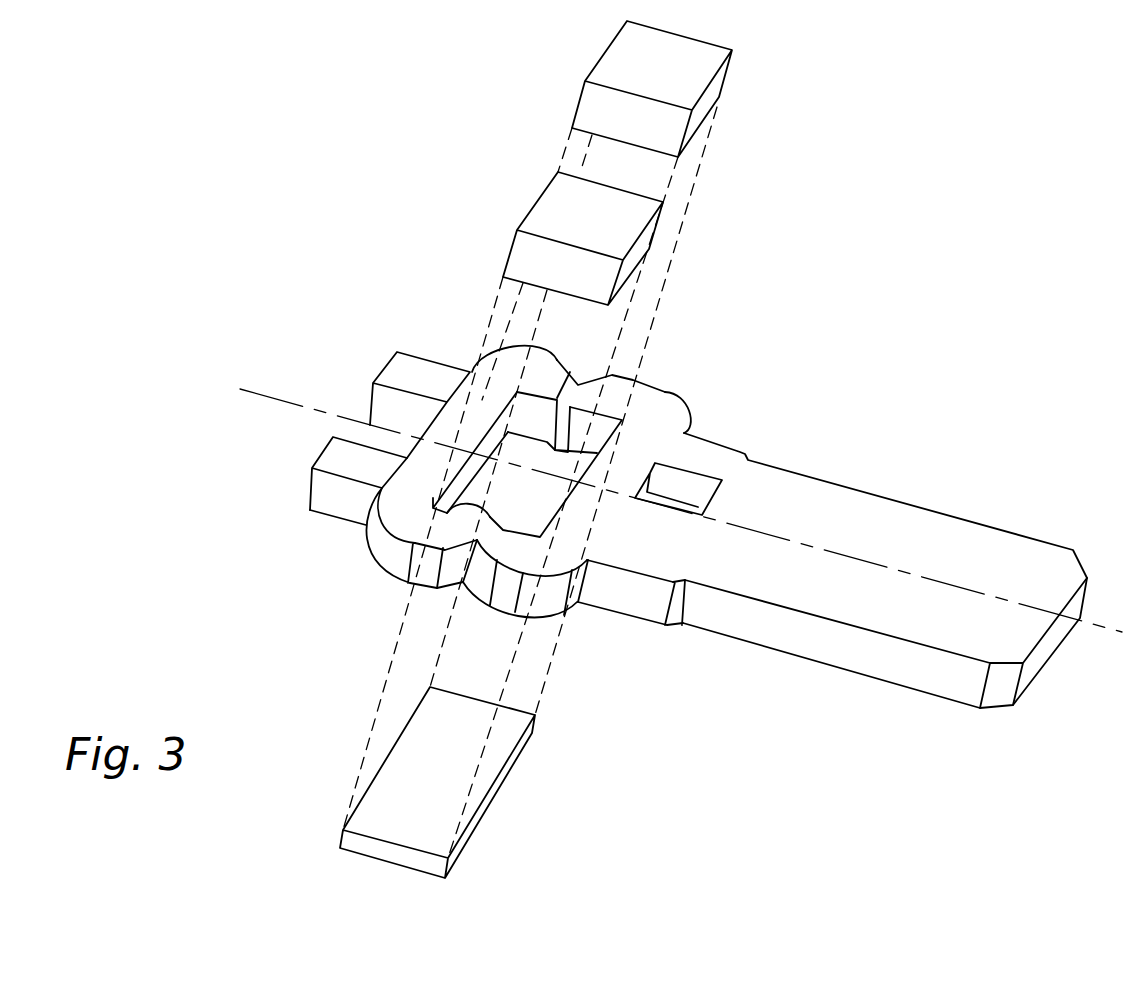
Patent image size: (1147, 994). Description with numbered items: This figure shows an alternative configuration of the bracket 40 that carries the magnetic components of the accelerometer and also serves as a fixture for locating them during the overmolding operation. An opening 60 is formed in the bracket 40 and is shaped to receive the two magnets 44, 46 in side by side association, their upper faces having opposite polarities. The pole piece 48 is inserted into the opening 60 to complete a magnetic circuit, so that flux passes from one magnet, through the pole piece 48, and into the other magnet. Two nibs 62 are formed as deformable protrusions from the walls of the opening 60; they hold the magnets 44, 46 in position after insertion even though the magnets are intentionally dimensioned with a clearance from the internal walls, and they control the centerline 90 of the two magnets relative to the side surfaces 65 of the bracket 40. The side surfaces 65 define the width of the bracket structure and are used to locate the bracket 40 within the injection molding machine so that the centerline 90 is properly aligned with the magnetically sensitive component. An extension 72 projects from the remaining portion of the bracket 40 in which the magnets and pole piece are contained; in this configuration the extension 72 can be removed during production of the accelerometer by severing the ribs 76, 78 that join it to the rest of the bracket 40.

The bracket 40 is at (553, 605).
The magnet 44 is at (707, 53).
The magnet 46 is at (647, 208).
The pole piece 48 is at (370, 848).
The opening 60 is at (472, 497).
The nibs 62 is at (600, 410).
The side surfaces 65 is at (548, 348).
The extension 72 is at (905, 525).
The rib 76 is at (708, 467).
The rib 78 is at (670, 563).
The centerline 90 is at (1093, 626).